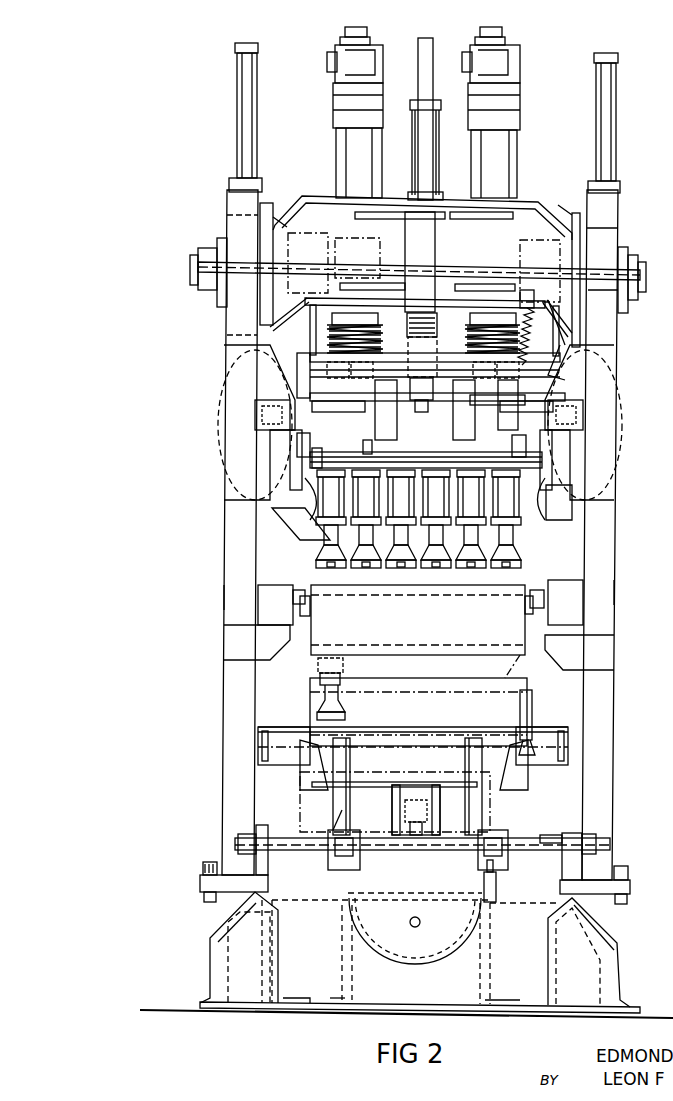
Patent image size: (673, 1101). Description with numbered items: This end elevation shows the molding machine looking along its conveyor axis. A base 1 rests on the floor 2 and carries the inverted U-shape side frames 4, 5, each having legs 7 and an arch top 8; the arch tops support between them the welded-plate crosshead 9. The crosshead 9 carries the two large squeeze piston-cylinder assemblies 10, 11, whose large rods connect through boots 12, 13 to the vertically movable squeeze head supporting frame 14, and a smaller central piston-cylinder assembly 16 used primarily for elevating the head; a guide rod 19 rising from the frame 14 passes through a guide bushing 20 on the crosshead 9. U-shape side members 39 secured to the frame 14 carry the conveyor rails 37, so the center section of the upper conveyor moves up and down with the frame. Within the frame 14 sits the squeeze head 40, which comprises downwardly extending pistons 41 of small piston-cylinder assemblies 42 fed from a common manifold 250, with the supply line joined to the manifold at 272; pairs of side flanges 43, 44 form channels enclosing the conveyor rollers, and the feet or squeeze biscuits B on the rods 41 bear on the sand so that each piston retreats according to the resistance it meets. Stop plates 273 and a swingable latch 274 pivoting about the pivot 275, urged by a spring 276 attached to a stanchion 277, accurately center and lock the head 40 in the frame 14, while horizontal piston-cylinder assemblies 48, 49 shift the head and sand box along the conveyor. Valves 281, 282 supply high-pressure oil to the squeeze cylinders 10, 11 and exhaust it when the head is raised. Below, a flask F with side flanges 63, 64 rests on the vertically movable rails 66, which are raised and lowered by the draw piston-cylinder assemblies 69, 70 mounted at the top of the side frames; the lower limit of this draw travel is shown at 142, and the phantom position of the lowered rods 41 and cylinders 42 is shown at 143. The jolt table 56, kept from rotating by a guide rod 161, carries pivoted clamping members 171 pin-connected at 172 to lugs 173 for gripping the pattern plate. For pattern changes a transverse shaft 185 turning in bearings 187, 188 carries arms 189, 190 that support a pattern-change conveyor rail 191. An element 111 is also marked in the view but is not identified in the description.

The base 1 is at (620, 955).
The floor 2 is at (172, 1010).
The side frame 4 is at (216, 600).
The side frame 5 is at (623, 594).
The leg 7 is at (224, 703).
The arch top 8 is at (224, 214).
The crosshead 9 is at (541, 197).
The piston-cylinder assembly 10 is at (336, 180).
The piston-cylinder assembly 11 is at (505, 158).
The boot 12 is at (350, 325).
The boot 13 is at (492, 325).
The squeeze head supporting frame 14 is at (322, 358).
The centrally disposed piston-cylinder assembly 16 is at (440, 150).
The guide rod 19 is at (430, 42).
The guide bushing 20 is at (438, 242).
The rail 37 is at (312, 490).
The U-shape side member 39 is at (224, 440).
The squeeze head 40 is at (440, 450).
The piston 41 is at (507, 550).
The piston-cylinder assembly 42 is at (505, 508).
The side flange 43 is at (316, 458).
The side flange 44 is at (520, 458).
The piston-cylinder assembly 48 is at (255, 420).
The piston-cylinder assembly 49 is at (583, 422).
The table 56 is at (520, 828).
The side flange 63 is at (303, 590).
The side flange 64 is at (548, 580).
The rail 66 is at (295, 588).
The draw piston-cylinder assembly 69 is at (240, 117).
The draw piston-cylinder assembly 70 is at (616, 122).
The housing 111 is at (340, 270).
The lower position of draw rails 142 is at (526, 720).
The phantom line position 143 is at (318, 666).
The guide rod 161 is at (493, 894).
The clamping member 171 is at (432, 778).
The pin connection 172 is at (440, 808).
The lug 173 is at (392, 812).
The shaft 185 is at (290, 850).
The bearing 187 is at (262, 826).
The bearing 188 is at (566, 826).
The arm 189 is at (340, 815).
The arm 190 is at (484, 812).
The rail 191 is at (284, 742).
The manifold 250 is at (362, 452).
The manifold connection 272 is at (476, 420).
The stop plate 273 is at (452, 420).
The swingable latch 274 is at (520, 415).
The pivot 275 is at (512, 386).
The spring 276 is at (572, 345).
The stanchion 277 is at (520, 290).
The valve 281 is at (338, 66).
The valve 282 is at (506, 65).
The squeeze biscuit B is at (405, 562).
The flask F is at (418, 620).